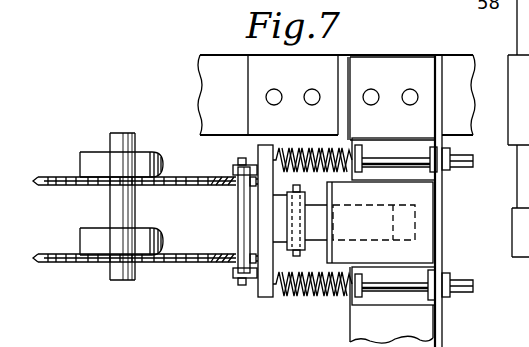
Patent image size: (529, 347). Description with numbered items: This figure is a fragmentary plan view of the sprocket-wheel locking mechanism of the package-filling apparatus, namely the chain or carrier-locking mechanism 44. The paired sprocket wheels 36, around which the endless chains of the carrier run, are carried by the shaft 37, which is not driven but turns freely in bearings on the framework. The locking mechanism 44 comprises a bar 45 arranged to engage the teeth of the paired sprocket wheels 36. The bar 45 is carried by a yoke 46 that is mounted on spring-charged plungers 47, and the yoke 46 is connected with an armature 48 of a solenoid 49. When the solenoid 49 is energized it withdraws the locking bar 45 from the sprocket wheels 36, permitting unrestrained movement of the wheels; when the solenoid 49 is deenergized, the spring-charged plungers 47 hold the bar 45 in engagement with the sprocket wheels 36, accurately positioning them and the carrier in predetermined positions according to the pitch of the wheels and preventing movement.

The sprocket wheels 36 is at (53, 176).
The shaft 37 is at (117, 201).
The carrier-locking mechanism 44 is at (453, 302).
The bar 45 is at (237, 219).
The yoke 46 is at (266, 252).
The spring-charged plungers 47 is at (393, 160).
The armature 48 is at (366, 213).
The solenoid 49 is at (413, 250).